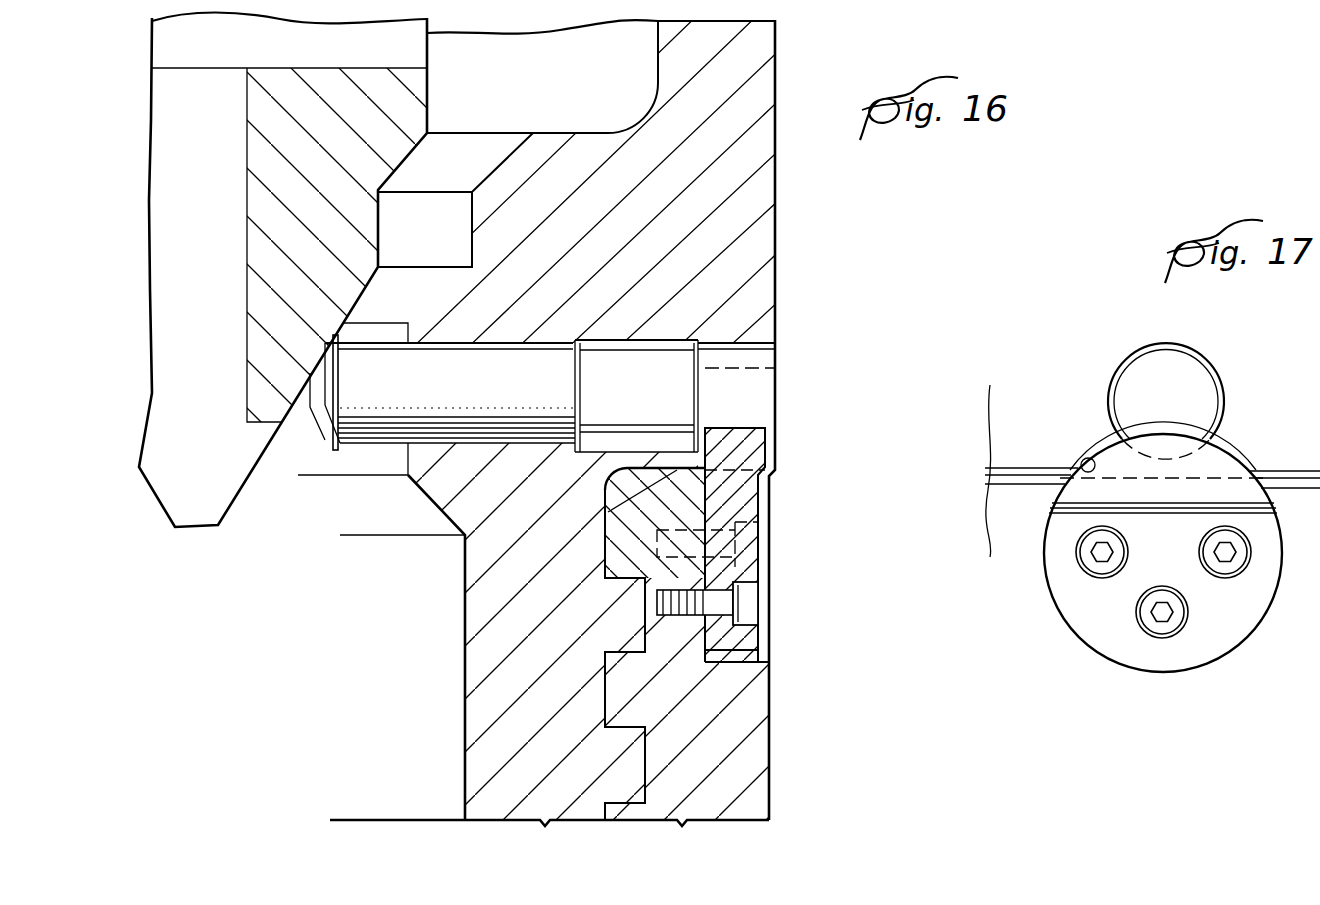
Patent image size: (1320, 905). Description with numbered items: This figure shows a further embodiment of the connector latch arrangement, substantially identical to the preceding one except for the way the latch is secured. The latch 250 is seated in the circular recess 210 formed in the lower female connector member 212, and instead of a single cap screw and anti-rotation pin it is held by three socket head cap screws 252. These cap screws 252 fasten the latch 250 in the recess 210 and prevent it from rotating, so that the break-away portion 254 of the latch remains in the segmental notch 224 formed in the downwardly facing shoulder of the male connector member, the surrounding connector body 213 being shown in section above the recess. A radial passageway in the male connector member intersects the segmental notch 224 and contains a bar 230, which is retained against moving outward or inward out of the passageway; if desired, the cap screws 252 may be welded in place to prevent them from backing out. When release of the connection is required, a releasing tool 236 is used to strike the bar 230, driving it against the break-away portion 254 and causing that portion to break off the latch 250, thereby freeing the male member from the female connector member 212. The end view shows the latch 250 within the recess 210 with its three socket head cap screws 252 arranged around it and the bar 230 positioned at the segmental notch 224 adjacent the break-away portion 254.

In FIG. 16, the circular recess 210 is at (740, 657).
In FIG. 16, the lower female connector member 212 is at (750, 740).
In FIG. 16, the housing block 213 is at (760, 231).
In FIG. 17, the segmental notch 224 is at (1095, 459).
In FIG. 16, the bar 230 is at (470, 384).
In FIG. 17, the bar 230 is at (1185, 372).
In FIG. 16, the releasing tool 236 is at (400, 98).
In FIG. 16, the latch 250 is at (753, 642).
In FIG. 16, the socket head cap screws 252 is at (707, 573).
In FIG. 17, the socket head cap screws 252 is at (1158, 598).
In FIG. 17, the break-away portion 254 is at (1227, 462).